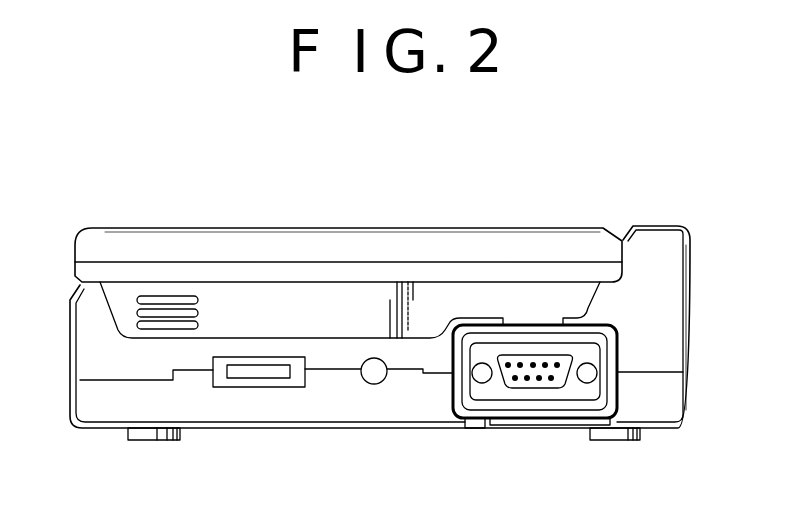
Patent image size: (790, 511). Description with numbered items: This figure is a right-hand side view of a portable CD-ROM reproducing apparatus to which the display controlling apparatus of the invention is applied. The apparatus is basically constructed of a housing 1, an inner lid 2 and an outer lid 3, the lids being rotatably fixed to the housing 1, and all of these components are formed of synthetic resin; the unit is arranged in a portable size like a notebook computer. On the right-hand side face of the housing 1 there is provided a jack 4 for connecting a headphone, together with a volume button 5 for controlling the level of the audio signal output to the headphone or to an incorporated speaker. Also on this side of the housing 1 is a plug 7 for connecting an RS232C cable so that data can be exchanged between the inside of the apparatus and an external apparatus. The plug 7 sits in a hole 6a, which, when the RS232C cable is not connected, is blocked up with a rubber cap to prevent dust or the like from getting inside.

The housing 1 is at (667, 347).
The inner lid 2 is at (291, 290).
The outer lid 3 is at (542, 237).
The jack 4 is at (374, 376).
The volume button 5 is at (262, 375).
The hole 6a is at (588, 343).
The plug 7 is at (538, 385).